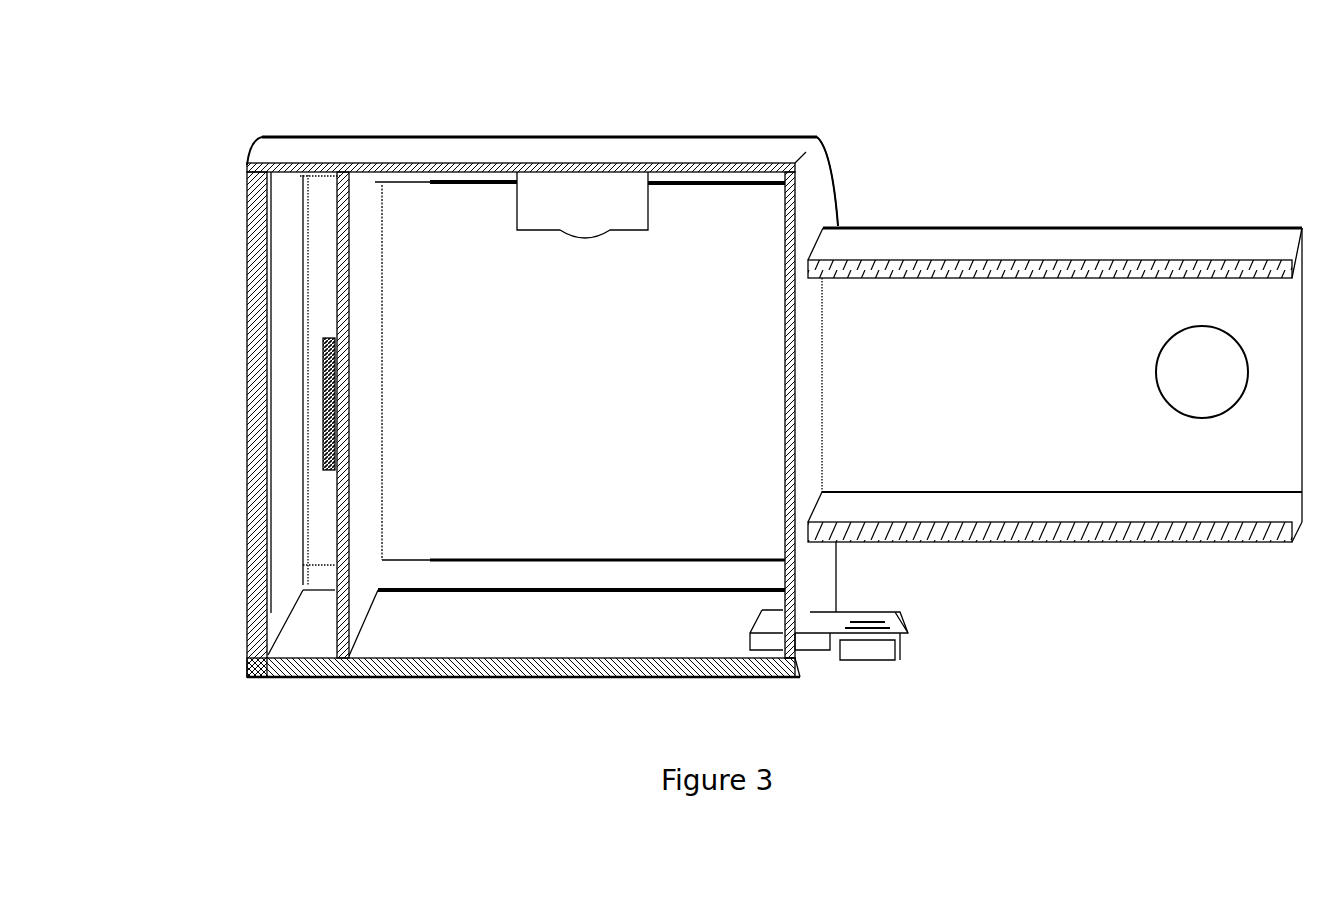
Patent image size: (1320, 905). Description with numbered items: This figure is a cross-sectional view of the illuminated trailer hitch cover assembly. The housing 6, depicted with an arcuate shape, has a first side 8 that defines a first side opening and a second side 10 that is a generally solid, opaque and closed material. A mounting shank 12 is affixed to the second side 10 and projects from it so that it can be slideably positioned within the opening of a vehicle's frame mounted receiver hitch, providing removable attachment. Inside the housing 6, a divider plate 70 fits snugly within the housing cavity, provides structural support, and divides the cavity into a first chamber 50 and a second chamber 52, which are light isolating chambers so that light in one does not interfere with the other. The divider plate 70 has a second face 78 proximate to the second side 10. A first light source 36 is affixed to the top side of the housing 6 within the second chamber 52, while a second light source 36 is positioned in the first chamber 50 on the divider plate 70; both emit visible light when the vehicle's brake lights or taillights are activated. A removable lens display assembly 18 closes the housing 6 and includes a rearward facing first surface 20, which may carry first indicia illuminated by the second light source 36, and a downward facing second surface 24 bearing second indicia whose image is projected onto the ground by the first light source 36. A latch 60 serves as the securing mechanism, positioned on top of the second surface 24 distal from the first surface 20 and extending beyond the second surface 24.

The housing 6 is at (604, 137).
The first side 8 is at (262, 135).
The second side 10 is at (823, 185).
The mounting shank 12 is at (965, 228).
The lens display assembly 18 is at (210, 424).
The first surface 20 is at (243, 265).
The second surface 24 is at (530, 680).
The light source 36 is at (205, 398).
The first chamber 50 is at (322, 486).
The second chamber 52 is at (660, 330).
The latch 60 is at (905, 613).
The divider plate 70 is at (406, 361).
The second face 78 is at (365, 222).